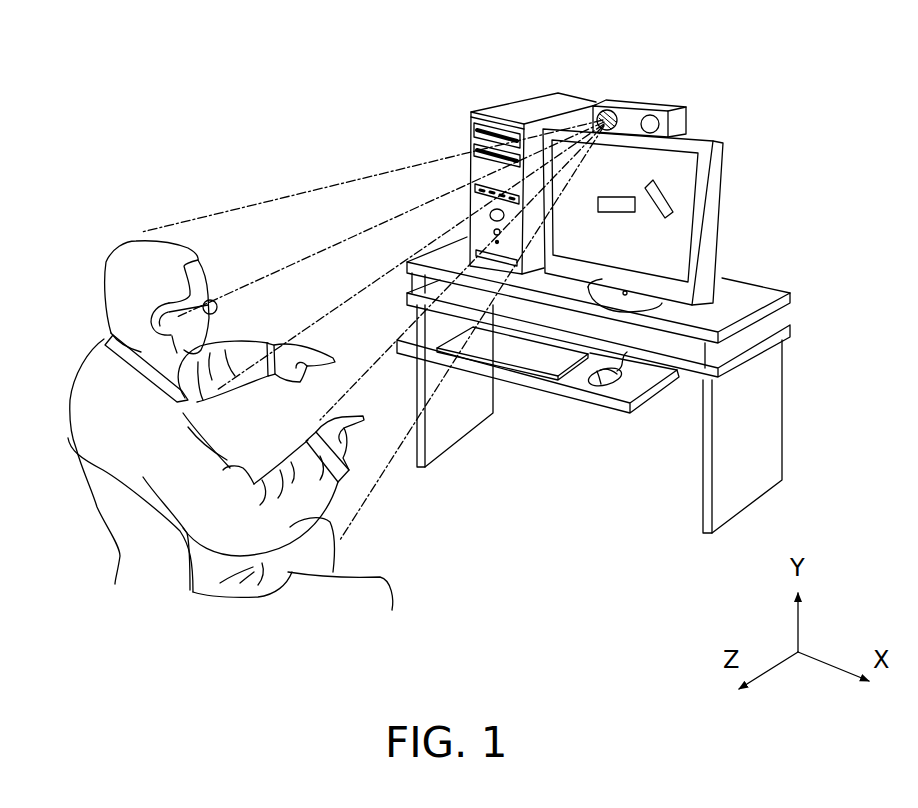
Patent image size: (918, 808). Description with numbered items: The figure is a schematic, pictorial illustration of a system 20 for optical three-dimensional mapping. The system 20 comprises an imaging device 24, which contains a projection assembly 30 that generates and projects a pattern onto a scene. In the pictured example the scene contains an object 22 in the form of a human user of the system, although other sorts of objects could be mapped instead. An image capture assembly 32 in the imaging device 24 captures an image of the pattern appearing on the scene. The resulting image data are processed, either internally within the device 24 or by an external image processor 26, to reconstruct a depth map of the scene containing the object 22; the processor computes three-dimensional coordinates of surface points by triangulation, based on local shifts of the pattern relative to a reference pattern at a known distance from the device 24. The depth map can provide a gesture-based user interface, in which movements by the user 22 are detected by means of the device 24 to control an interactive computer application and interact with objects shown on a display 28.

The system 20 is at (136, 142).
The object 22 is at (103, 292).
The imaging device 24 is at (690, 118).
The external image processor 26 is at (470, 128).
The display 28 is at (723, 203).
The projection assembly 30 is at (607, 110).
The image capture assembly 32 is at (653, 115).